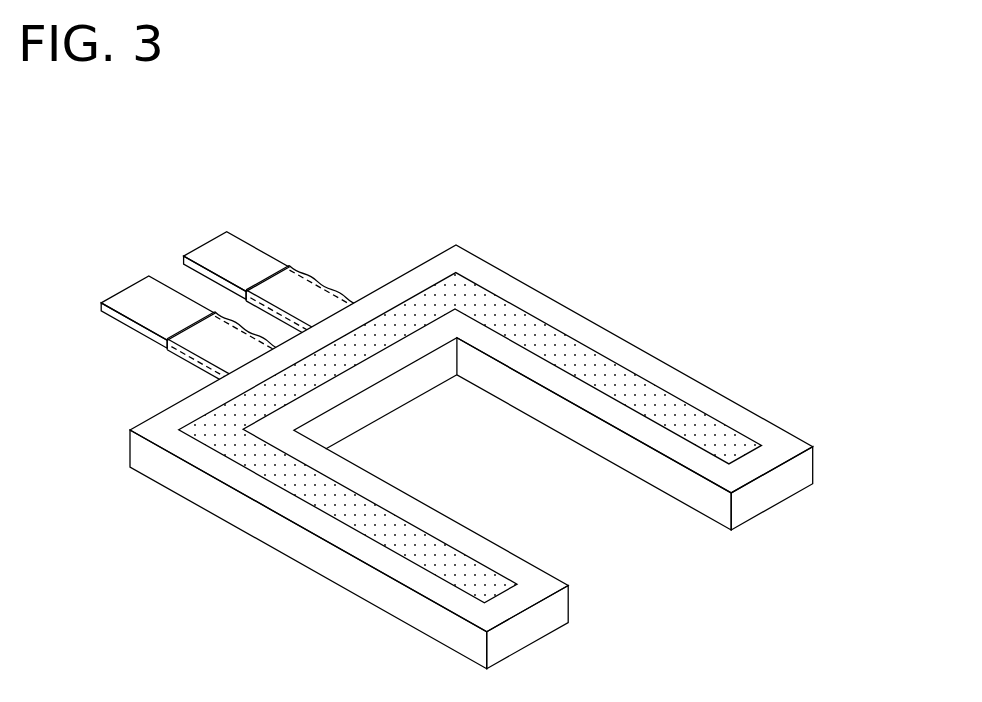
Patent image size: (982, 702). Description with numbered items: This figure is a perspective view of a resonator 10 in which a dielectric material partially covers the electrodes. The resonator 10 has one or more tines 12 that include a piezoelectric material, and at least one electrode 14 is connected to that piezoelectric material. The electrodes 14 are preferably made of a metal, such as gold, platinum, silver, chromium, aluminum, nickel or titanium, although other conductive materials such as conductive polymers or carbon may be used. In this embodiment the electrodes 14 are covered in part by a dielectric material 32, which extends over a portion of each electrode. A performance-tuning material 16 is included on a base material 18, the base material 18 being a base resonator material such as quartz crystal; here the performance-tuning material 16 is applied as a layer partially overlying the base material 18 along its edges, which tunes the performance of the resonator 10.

The resonator 10 is at (709, 215).
The tine 12 is at (649, 362).
The electrode 14 is at (137, 302).
The performance-tuning material 16 is at (500, 317).
The base material 18 is at (798, 475).
The dielectric material 32 is at (177, 327).